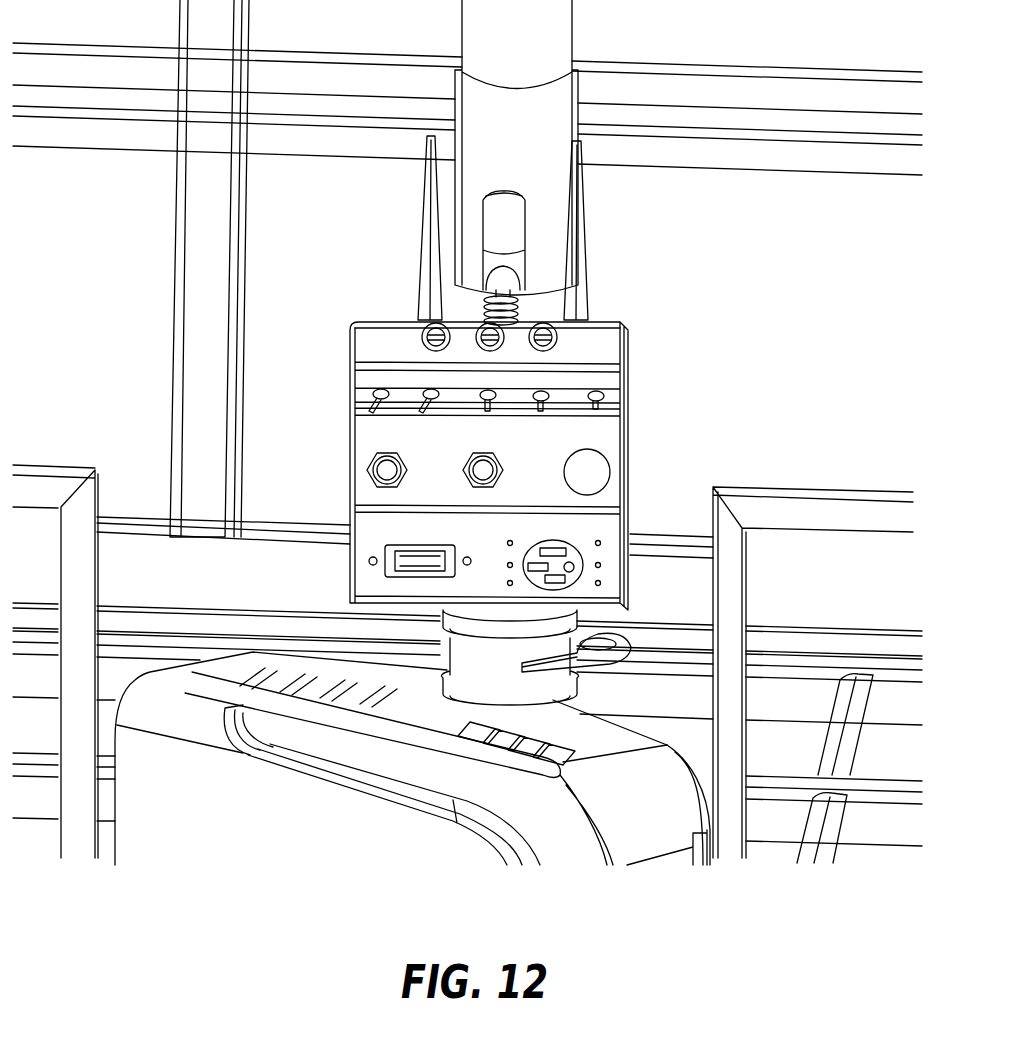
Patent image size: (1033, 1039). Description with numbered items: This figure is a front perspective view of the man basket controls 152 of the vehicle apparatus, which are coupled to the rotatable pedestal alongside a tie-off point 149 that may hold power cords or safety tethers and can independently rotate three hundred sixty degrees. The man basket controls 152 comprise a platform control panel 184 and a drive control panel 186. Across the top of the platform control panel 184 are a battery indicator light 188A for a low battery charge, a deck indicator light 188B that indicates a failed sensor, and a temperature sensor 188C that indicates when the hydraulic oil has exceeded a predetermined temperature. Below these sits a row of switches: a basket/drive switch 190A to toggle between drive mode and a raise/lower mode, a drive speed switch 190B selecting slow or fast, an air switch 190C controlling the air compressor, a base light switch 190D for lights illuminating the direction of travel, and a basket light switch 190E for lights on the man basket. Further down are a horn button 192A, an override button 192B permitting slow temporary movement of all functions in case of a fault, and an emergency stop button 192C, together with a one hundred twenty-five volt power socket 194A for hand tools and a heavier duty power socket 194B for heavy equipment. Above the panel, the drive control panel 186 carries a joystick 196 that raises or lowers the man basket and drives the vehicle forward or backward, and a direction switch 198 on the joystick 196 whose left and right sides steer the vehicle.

The tie-off point 149 is at (622, 645).
The man basket controls 152 is at (349, 459).
The platform control panel 184 is at (620, 320).
The drive control panel 186 is at (547, 292).
The battery indicator light 188A is at (420, 333).
The deck indicator light 188B is at (488, 330).
The temperature sensor 188C is at (557, 325).
The basket/drive switch 190A is at (378, 398).
The drive speed switch 190B is at (432, 393).
The air switch 190C is at (488, 393).
The base light switch 190D is at (547, 403).
The basket light switch 190E is at (610, 400).
The horn button 192A is at (375, 470).
The override button 192B is at (470, 470).
The emergency stop button 192C is at (590, 472).
The 125V power socket 194A is at (385, 565).
The 125/220 power socket 194B is at (568, 557).
The joystick 196 is at (500, 247).
The direction switch 198 is at (497, 196).